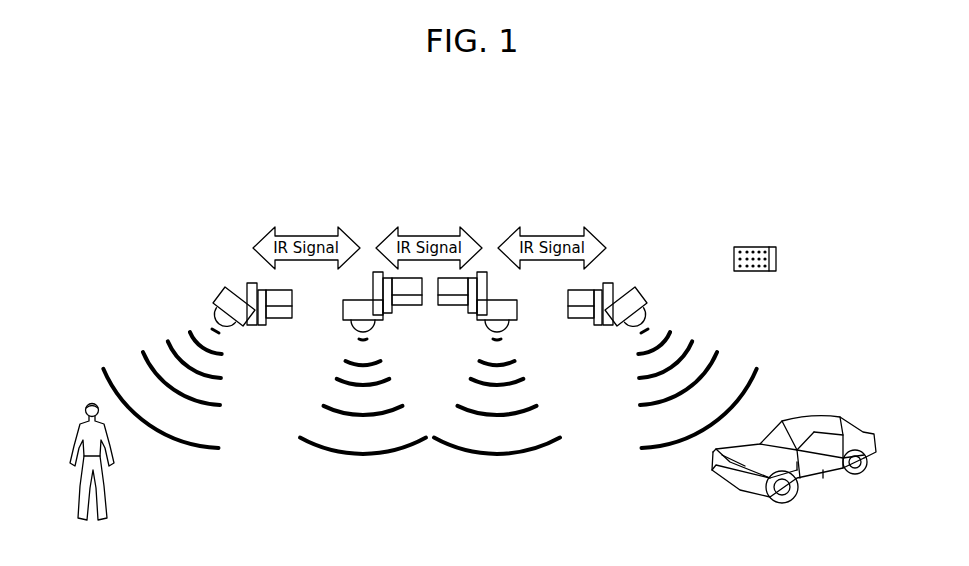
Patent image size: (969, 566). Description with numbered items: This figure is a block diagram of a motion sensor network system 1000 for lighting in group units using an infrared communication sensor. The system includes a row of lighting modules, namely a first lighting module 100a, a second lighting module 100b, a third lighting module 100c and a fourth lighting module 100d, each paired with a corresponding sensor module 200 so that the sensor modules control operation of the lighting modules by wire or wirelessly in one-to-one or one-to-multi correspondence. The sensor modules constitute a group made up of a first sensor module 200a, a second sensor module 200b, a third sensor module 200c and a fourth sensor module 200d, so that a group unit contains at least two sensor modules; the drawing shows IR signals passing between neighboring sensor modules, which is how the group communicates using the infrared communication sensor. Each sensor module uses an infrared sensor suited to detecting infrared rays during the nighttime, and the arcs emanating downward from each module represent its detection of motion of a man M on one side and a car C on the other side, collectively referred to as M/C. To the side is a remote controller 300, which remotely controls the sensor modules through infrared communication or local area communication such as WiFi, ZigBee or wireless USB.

The motion sensor network system 1000 is at (681, 141).
The sensor module 200 is at (212, 190).
The first sensor module 200a is at (622, 303).
The second sensor module 200b is at (497, 305).
The third sensor module 200c is at (362, 305).
The fourth sensor module 200d is at (233, 298).
The first lighting module 100a is at (575, 304).
The second lighting module 100b is at (448, 299).
The third lighting module 100c is at (413, 299).
The fourth lighting module 100d is at (281, 312).
The remote controller 300 is at (757, 246).
The man M is at (91, 404).
The car C is at (812, 422).